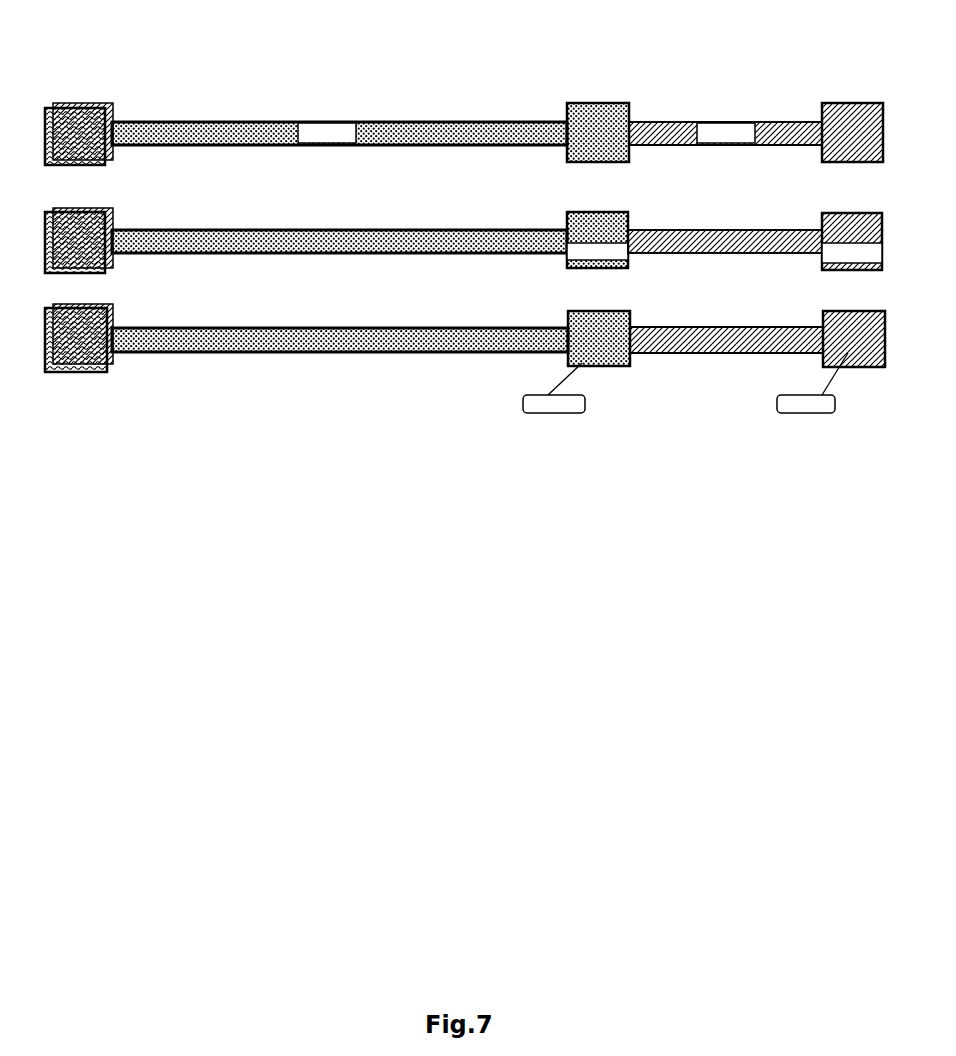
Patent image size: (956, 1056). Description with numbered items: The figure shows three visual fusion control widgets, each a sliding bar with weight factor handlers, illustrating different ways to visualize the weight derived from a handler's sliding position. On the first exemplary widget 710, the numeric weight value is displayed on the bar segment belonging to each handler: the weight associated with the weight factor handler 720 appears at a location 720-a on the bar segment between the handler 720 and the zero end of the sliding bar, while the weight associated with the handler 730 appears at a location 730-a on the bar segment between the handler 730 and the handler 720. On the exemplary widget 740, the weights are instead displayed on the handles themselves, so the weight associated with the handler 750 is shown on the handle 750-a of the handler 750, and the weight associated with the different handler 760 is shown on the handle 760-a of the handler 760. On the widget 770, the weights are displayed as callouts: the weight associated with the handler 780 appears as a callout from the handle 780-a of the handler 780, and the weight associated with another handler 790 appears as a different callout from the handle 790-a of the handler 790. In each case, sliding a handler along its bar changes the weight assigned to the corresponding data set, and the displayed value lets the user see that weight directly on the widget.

The first exemplary widget 710 is at (281, 110).
The weight factor handler 720 is at (594, 103).
The location on the bar segment 720-a is at (331, 120).
The handler 730 is at (847, 103).
The location on the bar segment 730-a is at (738, 122).
The exemplary widget 740 is at (275, 213).
The handler 750 is at (600, 212).
The handle 750-a is at (628, 265).
The handler 760 is at (840, 212).
The handle 760-a is at (828, 270).
The widget 770 is at (276, 313).
The handler 780 is at (583, 308).
The handle 780-a is at (565, 413).
The handler 790 is at (833, 311).
The handle 790-a is at (802, 413).